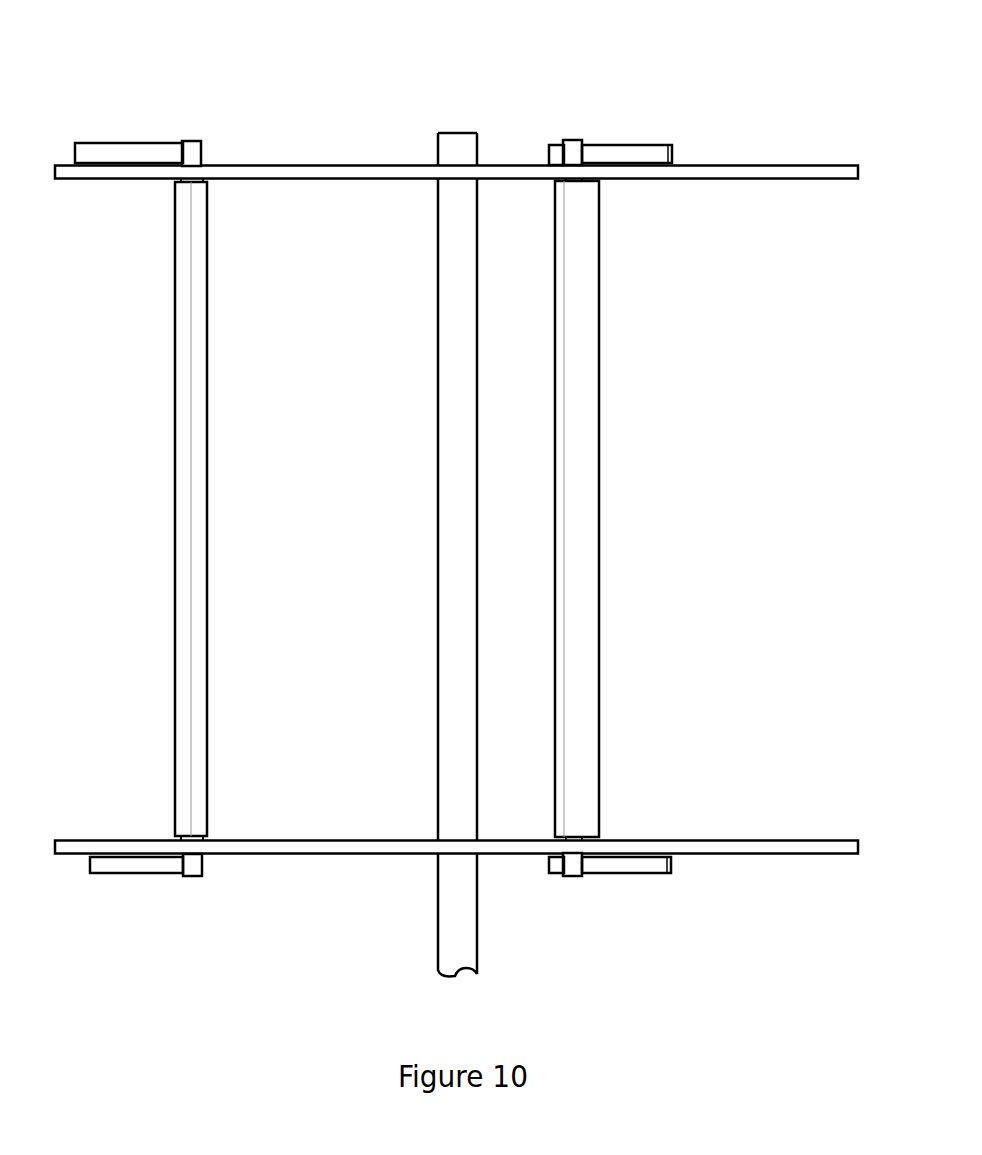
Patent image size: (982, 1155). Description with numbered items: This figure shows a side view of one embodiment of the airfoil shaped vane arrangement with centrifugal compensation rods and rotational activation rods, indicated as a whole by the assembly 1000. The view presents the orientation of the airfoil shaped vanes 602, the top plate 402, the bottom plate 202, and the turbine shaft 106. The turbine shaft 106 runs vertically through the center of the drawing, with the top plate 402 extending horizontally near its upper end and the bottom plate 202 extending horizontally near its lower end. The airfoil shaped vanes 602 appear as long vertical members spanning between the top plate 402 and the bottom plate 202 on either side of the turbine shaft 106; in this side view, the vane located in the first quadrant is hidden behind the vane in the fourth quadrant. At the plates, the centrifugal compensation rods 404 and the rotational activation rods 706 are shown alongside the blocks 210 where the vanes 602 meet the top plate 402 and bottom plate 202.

The assembly 1000 is at (127, 58).
The turbine shaft 106 is at (477, 920).
The top plate 402 is at (400, 165).
The bottom plate 202 is at (818, 840).
The airfoil shaped vane 602 is at (175, 290).
The block 210 is at (194, 141).
The centrifugal compensation rod 404 is at (556, 145).
The rotational activation rod 706 is at (102, 143).